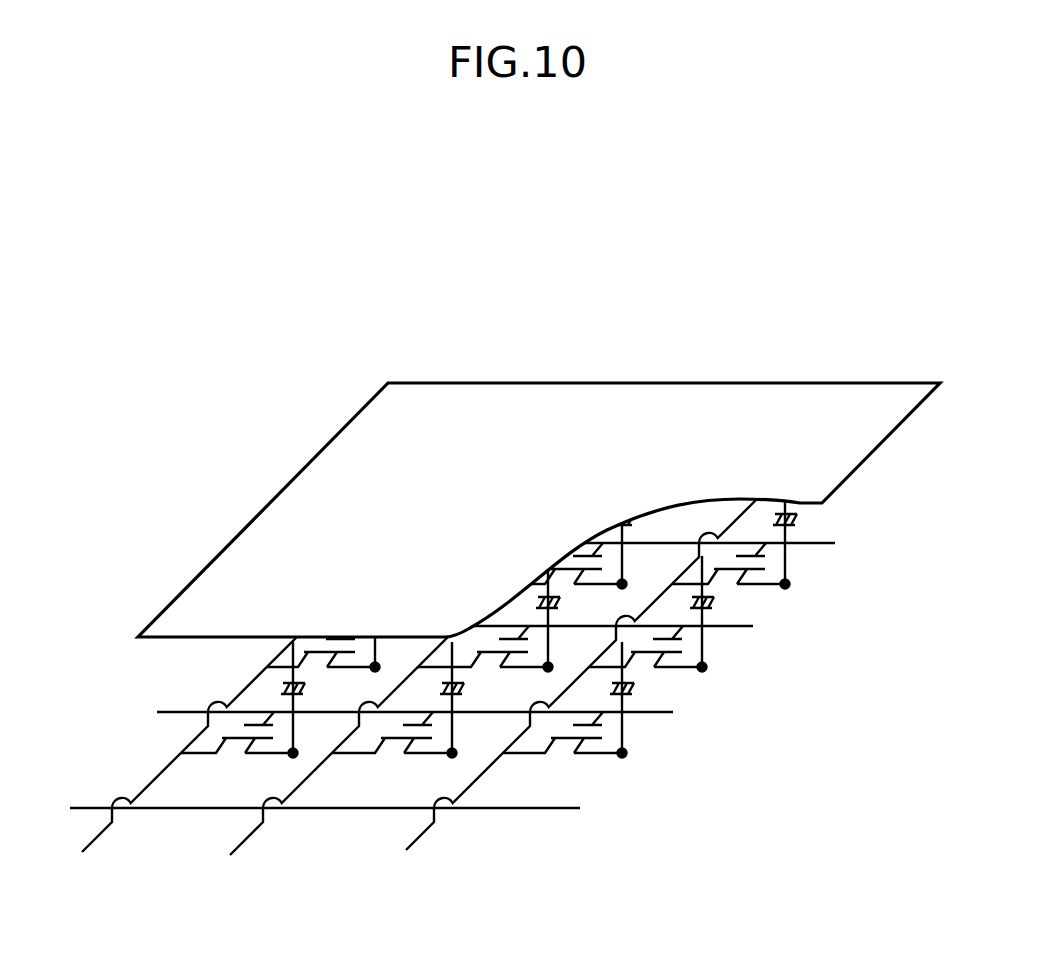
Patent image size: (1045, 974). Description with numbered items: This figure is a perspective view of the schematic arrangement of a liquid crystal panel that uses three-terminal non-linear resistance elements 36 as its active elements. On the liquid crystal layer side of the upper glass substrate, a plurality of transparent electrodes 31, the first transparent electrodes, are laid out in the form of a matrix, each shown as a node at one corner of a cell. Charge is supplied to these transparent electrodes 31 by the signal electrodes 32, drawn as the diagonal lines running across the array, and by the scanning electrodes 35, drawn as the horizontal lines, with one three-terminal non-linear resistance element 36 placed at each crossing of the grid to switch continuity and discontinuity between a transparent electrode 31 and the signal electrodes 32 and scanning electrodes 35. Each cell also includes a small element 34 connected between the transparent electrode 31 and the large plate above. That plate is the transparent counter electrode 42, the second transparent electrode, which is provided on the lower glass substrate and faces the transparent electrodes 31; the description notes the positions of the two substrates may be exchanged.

The transparent electrodes 31 is at (628, 755).
The signal electrodes 32 is at (413, 840).
The storage capacitor 34 is at (636, 687).
The scanning electrodes 35 is at (173, 712).
The three-terminal non-linear resistance elements 36 is at (613, 777).
The transparent counter electrode 42 is at (855, 455).